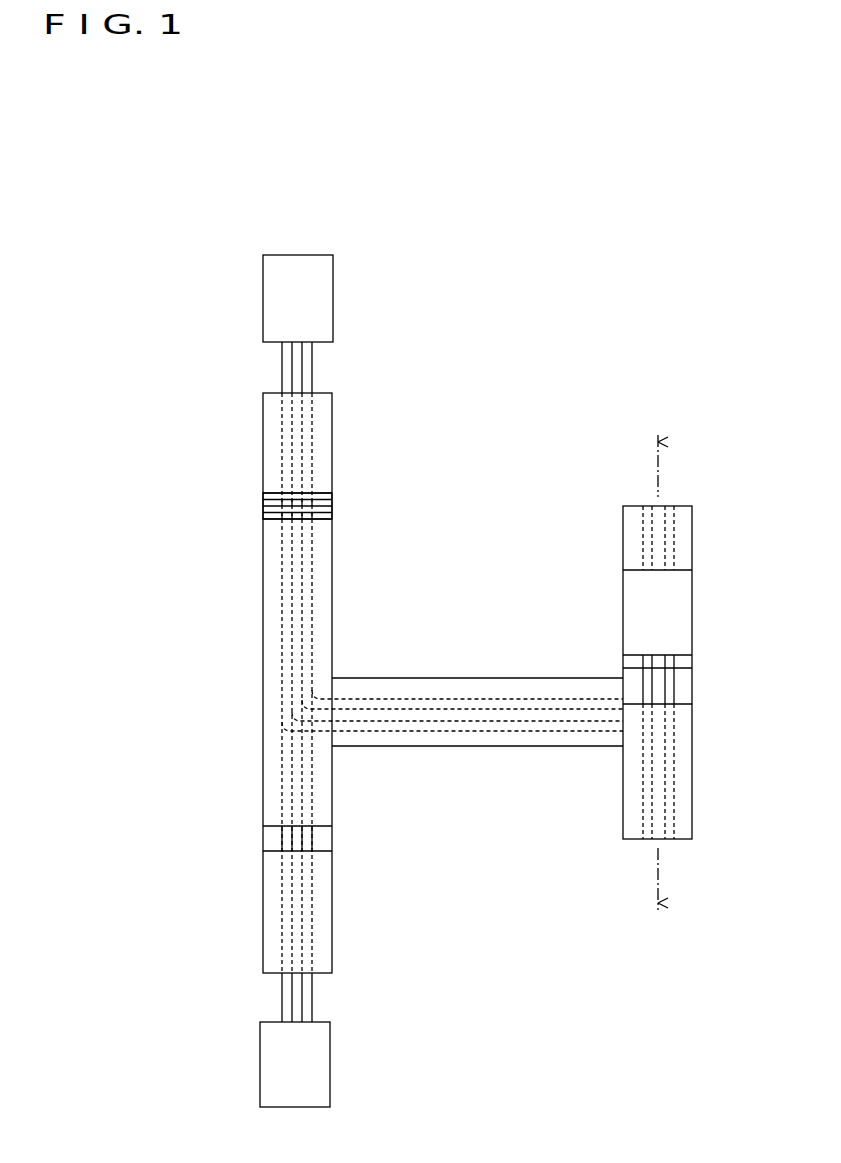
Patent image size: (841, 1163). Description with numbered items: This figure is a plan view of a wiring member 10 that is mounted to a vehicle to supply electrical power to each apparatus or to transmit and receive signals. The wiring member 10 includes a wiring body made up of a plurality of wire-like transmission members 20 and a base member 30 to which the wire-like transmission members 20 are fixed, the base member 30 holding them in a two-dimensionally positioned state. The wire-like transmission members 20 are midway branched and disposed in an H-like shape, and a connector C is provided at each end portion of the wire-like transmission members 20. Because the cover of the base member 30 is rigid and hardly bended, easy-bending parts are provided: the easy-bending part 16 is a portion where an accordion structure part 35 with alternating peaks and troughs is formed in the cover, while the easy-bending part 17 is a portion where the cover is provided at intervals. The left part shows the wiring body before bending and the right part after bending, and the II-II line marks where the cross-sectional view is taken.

The wiring member 10 is at (186, 182).
The easy-bending part 16 is at (333, 506).
The easy-bending part 17 is at (333, 840).
The wire-like transmission member 20 is at (286, 372).
The base member 30 is at (333, 578).
The accordion structure part 35 is at (263, 505).
The connector C is at (322, 307).
The II-II line II is at (661, 442).